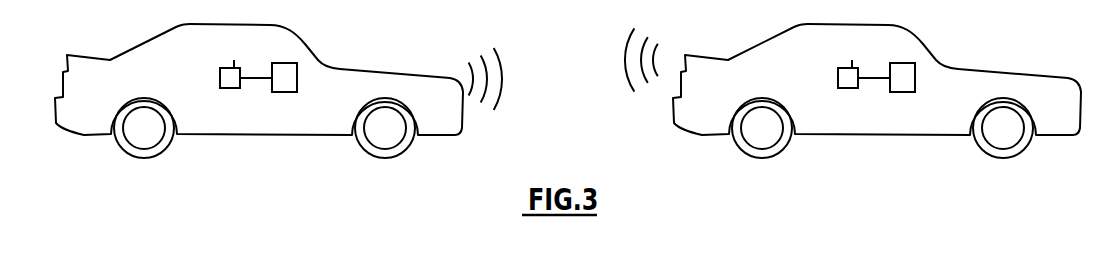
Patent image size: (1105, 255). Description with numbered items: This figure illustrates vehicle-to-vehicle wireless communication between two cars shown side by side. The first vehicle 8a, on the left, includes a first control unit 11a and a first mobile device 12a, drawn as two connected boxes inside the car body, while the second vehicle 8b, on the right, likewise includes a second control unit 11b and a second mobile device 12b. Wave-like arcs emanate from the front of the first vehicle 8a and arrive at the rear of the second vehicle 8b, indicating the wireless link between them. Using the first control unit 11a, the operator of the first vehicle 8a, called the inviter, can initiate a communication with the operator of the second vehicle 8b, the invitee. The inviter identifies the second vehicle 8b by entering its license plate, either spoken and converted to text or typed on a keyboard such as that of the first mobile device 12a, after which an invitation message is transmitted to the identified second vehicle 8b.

The first vehicle 8a is at (90, 122).
The second vehicle 8b is at (708, 121).
The first control unit 11a is at (285, 80).
The second control unit 11b is at (903, 80).
The first mobile device 12a is at (230, 88).
The second mobile device 12b is at (848, 88).